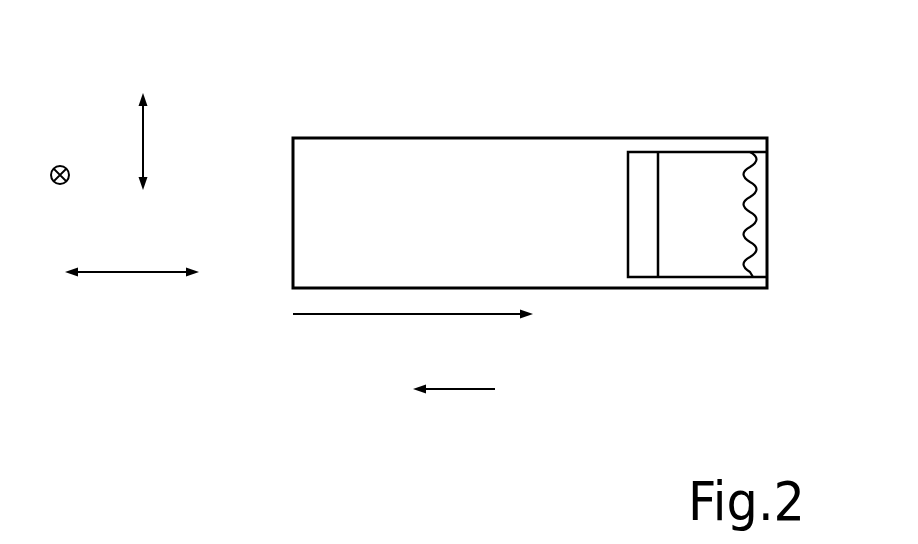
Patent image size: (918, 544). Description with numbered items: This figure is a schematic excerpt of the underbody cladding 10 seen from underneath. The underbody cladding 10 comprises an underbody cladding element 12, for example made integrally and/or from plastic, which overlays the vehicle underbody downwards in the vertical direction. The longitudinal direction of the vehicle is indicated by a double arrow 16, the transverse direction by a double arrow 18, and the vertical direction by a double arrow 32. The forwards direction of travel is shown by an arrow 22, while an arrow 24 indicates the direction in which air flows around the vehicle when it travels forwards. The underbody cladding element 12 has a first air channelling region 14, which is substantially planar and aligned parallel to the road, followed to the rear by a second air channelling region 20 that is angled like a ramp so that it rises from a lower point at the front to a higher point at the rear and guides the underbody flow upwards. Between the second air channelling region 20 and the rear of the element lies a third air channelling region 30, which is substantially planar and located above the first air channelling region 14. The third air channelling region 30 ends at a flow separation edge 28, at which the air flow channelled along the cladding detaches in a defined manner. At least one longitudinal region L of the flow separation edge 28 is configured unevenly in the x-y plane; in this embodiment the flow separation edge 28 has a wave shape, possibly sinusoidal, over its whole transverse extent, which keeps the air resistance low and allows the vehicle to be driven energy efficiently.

The underbody cladding 10 is at (595, 290).
The underbody cladding element 12 is at (512, 158).
The first air channelling region 14 is at (595, 165).
The double arrow 16 is at (132, 276).
The double arrow 18 is at (145, 143).
The second air channelling region 20 is at (647, 262).
The arrow 22 is at (465, 392).
The arrow 24 is at (342, 317).
The flow separation edge 28 is at (747, 150).
The third air channelling region 30 is at (726, 265).
The double arrow 32 is at (63, 165).
The longitudinal region L is at (768, 213).